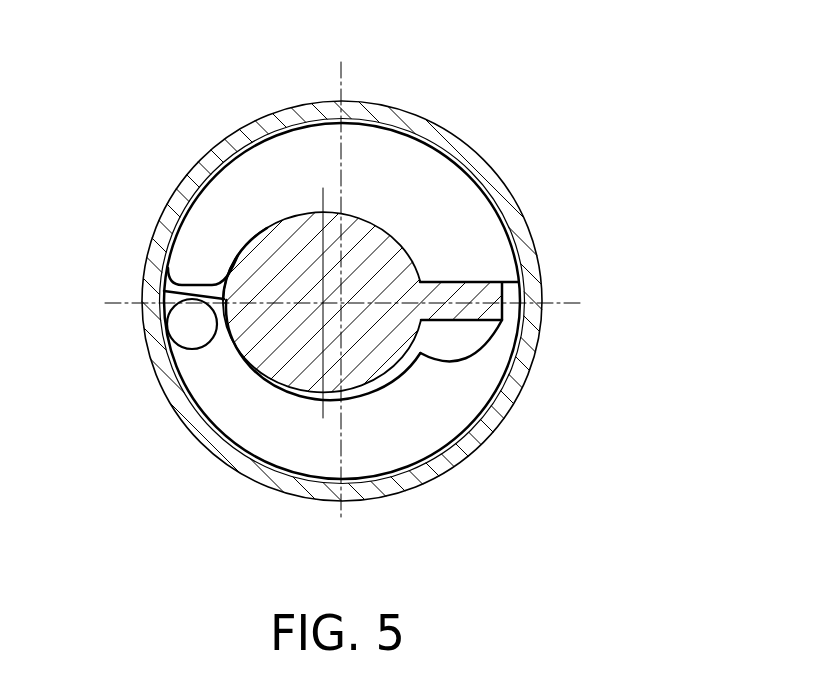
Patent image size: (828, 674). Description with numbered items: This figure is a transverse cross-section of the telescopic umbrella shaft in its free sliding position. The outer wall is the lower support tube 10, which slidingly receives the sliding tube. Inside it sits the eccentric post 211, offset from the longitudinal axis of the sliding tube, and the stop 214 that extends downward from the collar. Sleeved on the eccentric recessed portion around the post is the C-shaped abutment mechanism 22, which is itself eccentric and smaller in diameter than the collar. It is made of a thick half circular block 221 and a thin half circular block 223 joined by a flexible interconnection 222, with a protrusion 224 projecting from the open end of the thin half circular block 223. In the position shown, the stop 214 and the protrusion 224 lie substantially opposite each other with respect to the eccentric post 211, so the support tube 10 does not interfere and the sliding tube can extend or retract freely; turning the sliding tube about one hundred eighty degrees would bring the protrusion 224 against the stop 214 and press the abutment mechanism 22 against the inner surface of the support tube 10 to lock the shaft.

The lower support tube 10 is at (487, 185).
The C-shaped abutment mechanism 22 is at (392, 137).
The thick half circular block 221 is at (287, 147).
The flexible interconnection 222 is at (505, 338).
The thin half circular block 223 is at (438, 415).
The protrusion 224 is at (190, 337).
The eccentric post 211 is at (400, 292).
The stop 214 is at (495, 289).